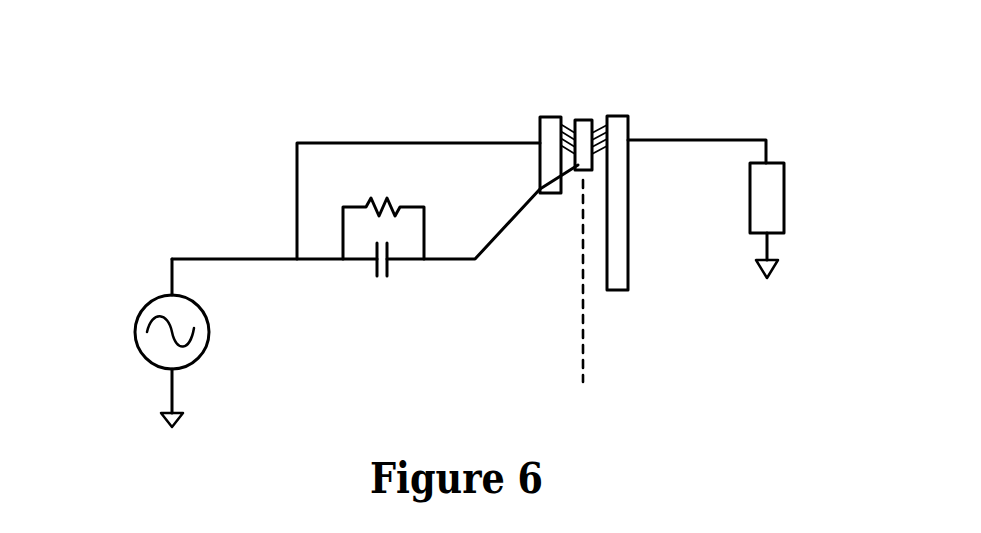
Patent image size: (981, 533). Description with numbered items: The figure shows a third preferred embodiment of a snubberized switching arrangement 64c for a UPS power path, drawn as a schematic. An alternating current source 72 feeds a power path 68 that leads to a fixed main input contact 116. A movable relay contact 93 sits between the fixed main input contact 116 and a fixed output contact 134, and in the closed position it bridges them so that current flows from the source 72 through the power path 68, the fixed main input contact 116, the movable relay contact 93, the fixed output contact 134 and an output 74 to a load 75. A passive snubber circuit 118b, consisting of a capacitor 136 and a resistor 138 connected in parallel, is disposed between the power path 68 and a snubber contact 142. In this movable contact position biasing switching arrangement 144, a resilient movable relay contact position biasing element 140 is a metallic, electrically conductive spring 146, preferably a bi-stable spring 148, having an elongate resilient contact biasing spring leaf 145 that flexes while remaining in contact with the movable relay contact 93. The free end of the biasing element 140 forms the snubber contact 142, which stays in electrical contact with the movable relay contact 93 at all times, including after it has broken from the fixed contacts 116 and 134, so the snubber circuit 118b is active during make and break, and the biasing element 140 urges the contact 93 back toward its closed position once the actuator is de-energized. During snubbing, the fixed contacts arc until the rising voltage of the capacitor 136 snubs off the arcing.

The snubberized switching arrangement 64c is at (257, 147).
The source 72 is at (130, 280).
The power path 68 is at (230, 252).
The passive snubber circuit 118b is at (355, 293).
The resistor 138 is at (380, 197).
The capacitor 136 is at (388, 278).
The spring 146 is at (477, 227).
The contact biasing spring leaf 145 is at (513, 220).
The movable relay contact position biasing element 140 is at (525, 200).
The bi-stable spring 148 is at (517, 253).
The fixed main input contact 116 is at (540, 117).
The movable relay contact 93 is at (579, 120).
The snubber contact 142 is at (580, 165).
The fixed output contact 134 is at (618, 125).
The movable contact position biasing switching arrangement 144 is at (642, 308).
The output 74 is at (738, 140).
The load 75 is at (765, 190).